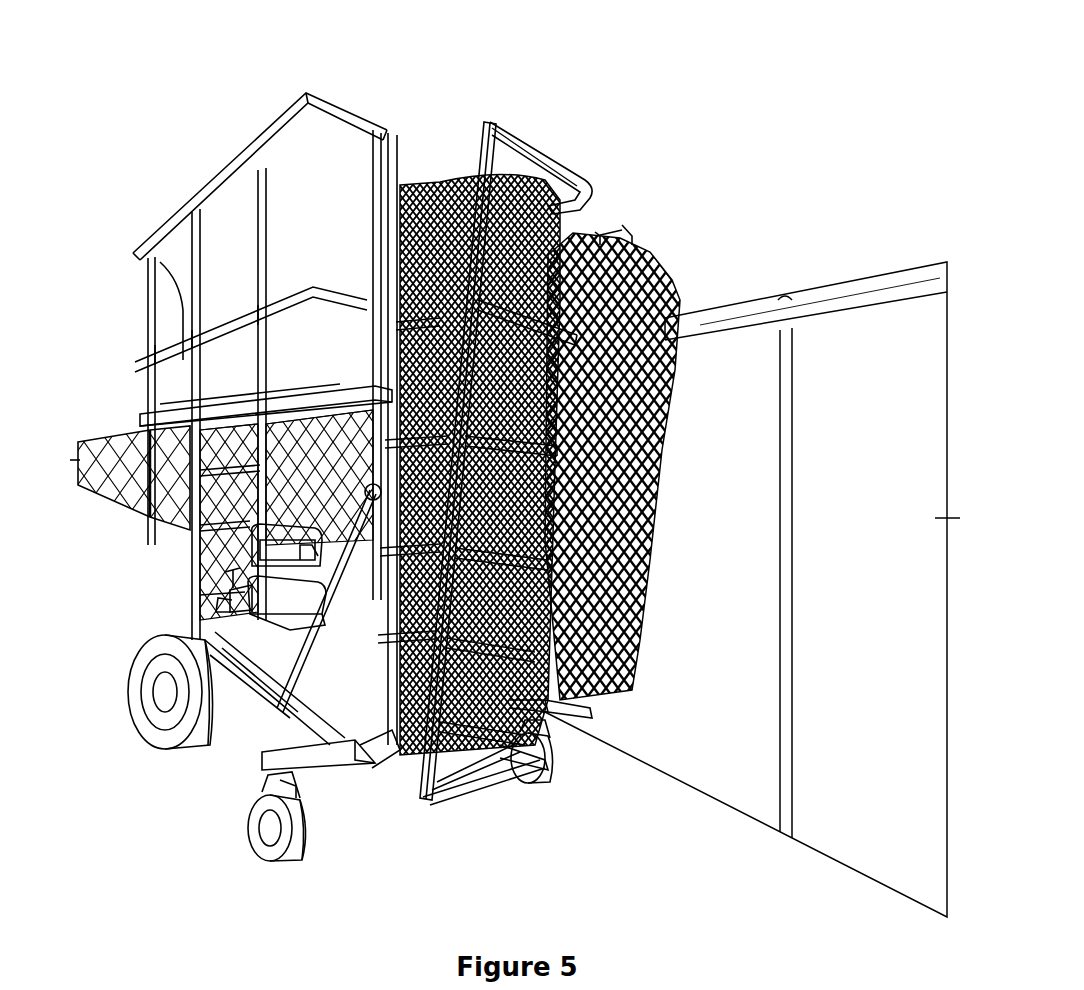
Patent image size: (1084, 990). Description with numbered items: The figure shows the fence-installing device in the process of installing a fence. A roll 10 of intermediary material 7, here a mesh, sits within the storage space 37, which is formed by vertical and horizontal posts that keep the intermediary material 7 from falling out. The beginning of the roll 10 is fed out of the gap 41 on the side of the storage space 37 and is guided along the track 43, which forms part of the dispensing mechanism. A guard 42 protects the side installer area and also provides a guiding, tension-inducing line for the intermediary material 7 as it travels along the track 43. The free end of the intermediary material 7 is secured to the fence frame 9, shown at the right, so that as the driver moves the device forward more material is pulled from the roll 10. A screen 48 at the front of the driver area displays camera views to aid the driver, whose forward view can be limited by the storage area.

The intermediary material 7 is at (651, 256).
The frame 9 is at (846, 268).
The roll 10 is at (526, 184).
The storage space 37 is at (471, 130).
The gap 41 is at (554, 206).
The guard 42 is at (630, 418).
The track 43 is at (587, 717).
The screen 48 is at (355, 471).